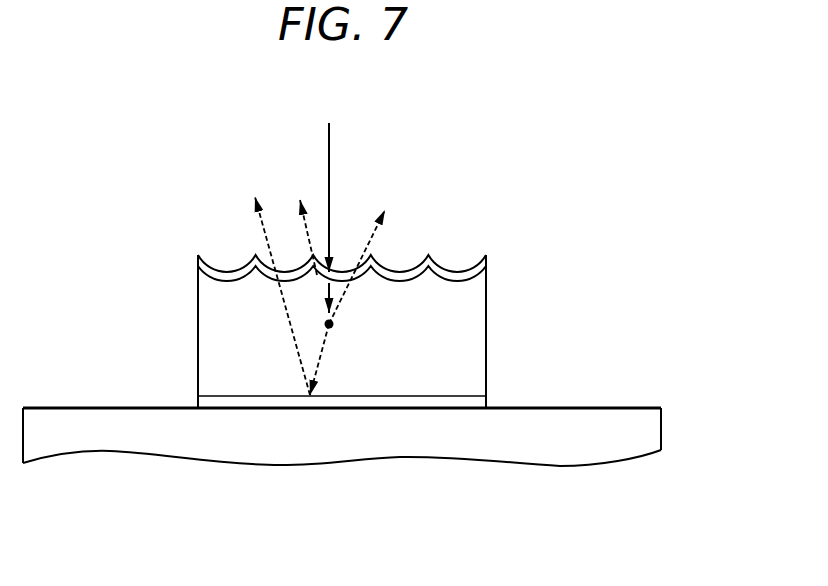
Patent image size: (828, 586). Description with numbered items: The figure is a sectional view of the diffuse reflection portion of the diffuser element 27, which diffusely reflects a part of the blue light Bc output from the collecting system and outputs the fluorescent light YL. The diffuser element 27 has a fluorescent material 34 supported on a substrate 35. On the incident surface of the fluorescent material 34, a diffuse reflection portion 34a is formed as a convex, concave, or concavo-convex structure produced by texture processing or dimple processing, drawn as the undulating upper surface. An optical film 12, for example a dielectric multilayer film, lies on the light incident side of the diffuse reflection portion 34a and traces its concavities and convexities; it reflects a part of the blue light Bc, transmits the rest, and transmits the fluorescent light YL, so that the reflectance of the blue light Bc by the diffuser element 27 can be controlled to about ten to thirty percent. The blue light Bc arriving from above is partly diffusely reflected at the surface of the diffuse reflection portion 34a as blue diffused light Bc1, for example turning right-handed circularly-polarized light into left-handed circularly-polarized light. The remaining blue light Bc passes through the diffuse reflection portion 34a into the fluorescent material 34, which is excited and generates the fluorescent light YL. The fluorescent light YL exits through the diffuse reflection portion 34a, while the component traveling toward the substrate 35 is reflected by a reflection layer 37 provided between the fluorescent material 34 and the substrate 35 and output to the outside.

The diffuser element 27 is at (168, 177).
The fluorescent material 34 is at (467, 342).
The diffuse reflection portion 34a is at (225, 272).
The optical film 12 is at (486, 262).
The reflection layer 37 is at (220, 400).
The substrate 35 is at (650, 427).
The blue light Bc is at (329, 133).
The blue diffused light Bc1 is at (318, 252).
The fluorescent light YL is at (360, 268).